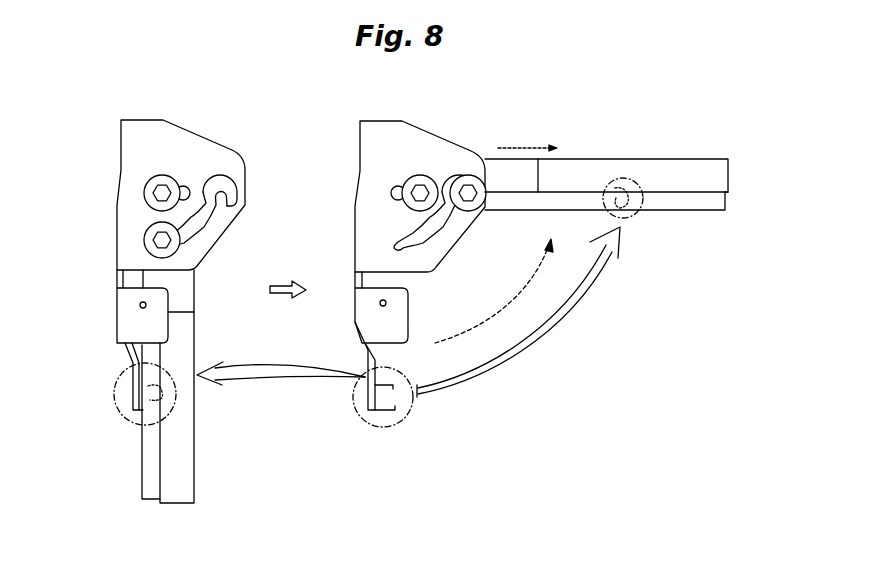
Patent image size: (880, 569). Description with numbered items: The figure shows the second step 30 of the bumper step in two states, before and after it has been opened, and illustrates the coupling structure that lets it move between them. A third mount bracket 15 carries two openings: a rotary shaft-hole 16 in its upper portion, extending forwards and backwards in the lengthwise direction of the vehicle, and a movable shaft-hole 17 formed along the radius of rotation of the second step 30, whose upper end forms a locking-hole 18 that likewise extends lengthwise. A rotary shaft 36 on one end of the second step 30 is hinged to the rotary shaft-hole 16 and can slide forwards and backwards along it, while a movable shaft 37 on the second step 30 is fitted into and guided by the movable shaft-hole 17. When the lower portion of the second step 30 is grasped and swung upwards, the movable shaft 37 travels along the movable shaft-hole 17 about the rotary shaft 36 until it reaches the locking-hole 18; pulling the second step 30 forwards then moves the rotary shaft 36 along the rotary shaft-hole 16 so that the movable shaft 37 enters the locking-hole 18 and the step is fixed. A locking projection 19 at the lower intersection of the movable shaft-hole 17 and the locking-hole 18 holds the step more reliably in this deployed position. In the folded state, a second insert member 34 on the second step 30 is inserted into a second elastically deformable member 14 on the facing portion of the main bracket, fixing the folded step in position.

The second elastically deformable member 14 is at (138, 408).
The third mount bracket 15 is at (121, 170).
The rotary shaft-hole 16 is at (185, 186).
The movable shaft-hole 17 is at (207, 220).
The locking-hole 18 is at (238, 194).
The locking projection 19 is at (229, 209).
The second step 30 is at (185, 462).
The second insert member 34 is at (187, 397).
The rotary shaft 36 is at (162, 174).
The movable shaft 37 is at (150, 238).